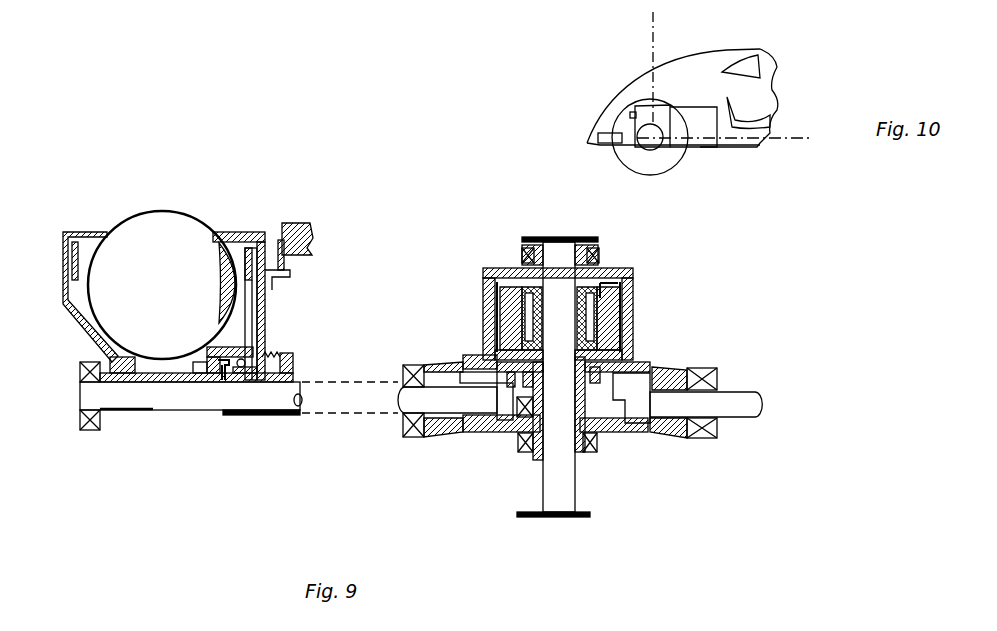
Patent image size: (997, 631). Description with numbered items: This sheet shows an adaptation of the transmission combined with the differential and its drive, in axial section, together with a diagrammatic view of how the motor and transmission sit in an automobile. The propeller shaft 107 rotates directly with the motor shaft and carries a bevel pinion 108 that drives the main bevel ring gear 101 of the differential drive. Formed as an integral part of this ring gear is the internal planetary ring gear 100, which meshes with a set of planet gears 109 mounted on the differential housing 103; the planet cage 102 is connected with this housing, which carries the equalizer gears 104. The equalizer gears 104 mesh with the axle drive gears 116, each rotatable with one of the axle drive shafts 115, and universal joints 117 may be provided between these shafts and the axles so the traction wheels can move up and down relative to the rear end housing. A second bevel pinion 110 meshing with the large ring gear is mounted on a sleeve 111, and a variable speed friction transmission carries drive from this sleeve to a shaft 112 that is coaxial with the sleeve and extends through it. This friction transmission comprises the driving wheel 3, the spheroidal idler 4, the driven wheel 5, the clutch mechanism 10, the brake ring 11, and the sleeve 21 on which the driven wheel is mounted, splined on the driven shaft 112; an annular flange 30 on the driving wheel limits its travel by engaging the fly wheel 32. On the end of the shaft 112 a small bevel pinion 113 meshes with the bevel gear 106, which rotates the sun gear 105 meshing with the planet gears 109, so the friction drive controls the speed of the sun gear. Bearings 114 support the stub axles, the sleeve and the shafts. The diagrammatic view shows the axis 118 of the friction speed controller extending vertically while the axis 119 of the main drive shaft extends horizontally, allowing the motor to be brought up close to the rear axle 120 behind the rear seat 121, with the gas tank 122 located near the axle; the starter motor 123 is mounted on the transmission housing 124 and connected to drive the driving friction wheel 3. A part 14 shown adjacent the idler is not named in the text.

In FIG. 9, the driving friction wheel 3 is at (282, 240).
In FIG. 9, the spheroidal idler 4 is at (188, 240).
In FIG. 9, the driven friction wheel 5 is at (88, 232).
In FIG. 9, the clutch plate 10 is at (258, 325).
In FIG. 9, the brake ring 11 is at (64, 244).
In FIG. 9, the race member 14 is at (228, 262).
In FIG. 9, the sleeve 21 is at (165, 382).
In FIG. 9, the annular flange 30 is at (290, 274).
In FIG. 9, the fly wheel 32 is at (312, 238).
In FIG. 9, the planetary ring gear 100 is at (630, 362).
In FIG. 9, the main bevel ring gear 101 is at (690, 362).
In FIG. 9, the planet cage 102 is at (487, 350).
In FIG. 9, the differential housing 103 is at (500, 300).
In FIG. 9, the equalizer gears 104 is at (505, 318).
In FIG. 9, the sun gear 105 is at (620, 348).
In FIG. 9, the bevel gear 106 is at (480, 433).
In FIG. 9, the propeller shaft 107 is at (738, 416).
In FIG. 9, the bevel pinion 108 is at (678, 432).
In FIG. 9, the planet gears 109 is at (633, 398).
In FIG. 9, the bevel pinion 110 is at (437, 428).
In FIG. 9, the sleeve 111 is at (290, 416).
In FIG. 9, the driven shaft 112 is at (197, 402).
In FIG. 9, the small bevel pinion 113 is at (462, 368).
In FIG. 9, the bearings 114 is at (85, 432).
In FIG. 9, the axle drive shafts 115 is at (548, 262).
In FIG. 9, the axle drive gears 116 is at (625, 276).
In FIG. 9, the universal joints 117 is at (585, 237).
In FIG. 10, the axis of friction speed controller 118 is at (656, 41).
In FIG. 10, the axis of main drive shaft 119 is at (785, 140).
In FIG. 10, the rear axle 120 is at (650, 137).
In FIG. 10, the rear seat 121 is at (733, 108).
In FIG. 10, the gas tank 122 is at (598, 137).
In FIG. 10, the starter motor 123 is at (630, 114).
In FIG. 10, the transmission housing 124 is at (643, 106).